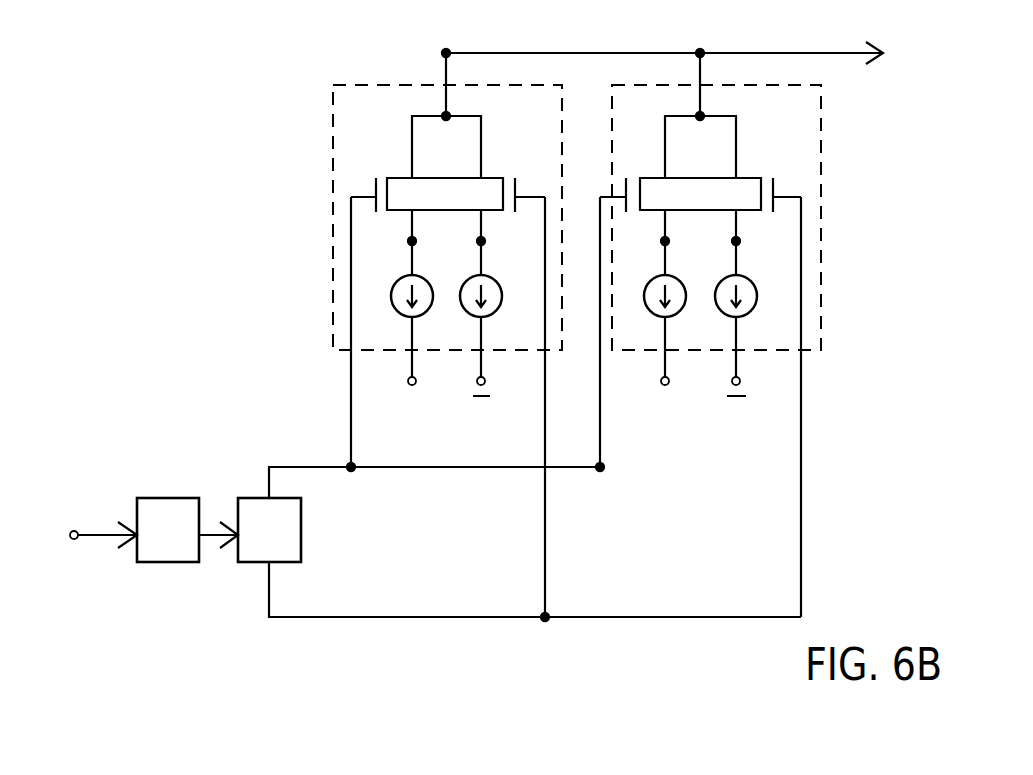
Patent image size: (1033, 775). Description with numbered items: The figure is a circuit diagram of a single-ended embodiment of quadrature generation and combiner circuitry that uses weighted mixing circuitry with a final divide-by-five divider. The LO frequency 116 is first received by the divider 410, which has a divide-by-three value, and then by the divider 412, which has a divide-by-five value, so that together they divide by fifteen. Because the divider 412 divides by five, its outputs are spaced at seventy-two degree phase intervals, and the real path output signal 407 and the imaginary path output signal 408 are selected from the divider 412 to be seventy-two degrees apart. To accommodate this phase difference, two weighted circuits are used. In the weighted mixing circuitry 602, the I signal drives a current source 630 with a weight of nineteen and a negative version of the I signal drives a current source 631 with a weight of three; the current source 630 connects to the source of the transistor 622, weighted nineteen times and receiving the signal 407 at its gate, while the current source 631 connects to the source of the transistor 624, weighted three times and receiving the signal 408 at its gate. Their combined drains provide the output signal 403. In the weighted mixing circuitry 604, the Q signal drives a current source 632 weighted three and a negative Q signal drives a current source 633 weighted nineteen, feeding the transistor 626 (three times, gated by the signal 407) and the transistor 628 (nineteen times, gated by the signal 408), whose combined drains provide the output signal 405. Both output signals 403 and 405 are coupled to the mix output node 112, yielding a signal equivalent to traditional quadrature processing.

The mix output node 112 is at (835, 58).
The output signal 403 is at (449, 71).
The output signal 405 is at (703, 71).
The weighted mixing circuitry 602 is at (333, 155).
The weighted mixing circuitry 604 is at (821, 174).
The transistor 622 is at (400, 178).
The transistor 624 is at (489, 178).
The transistor 626 is at (658, 177).
The transistor 628 is at (748, 177).
The current source 630 is at (425, 280).
The current source 631 is at (495, 280).
The current source 632 is at (680, 280).
The current source 633 is at (750, 280).
The LO frequency 116 is at (100, 535).
The divider 410 is at (157, 498).
The divider 412 is at (252, 565).
The real path output signal 407 is at (270, 489).
The imaginary path output signal 408 is at (362, 617).